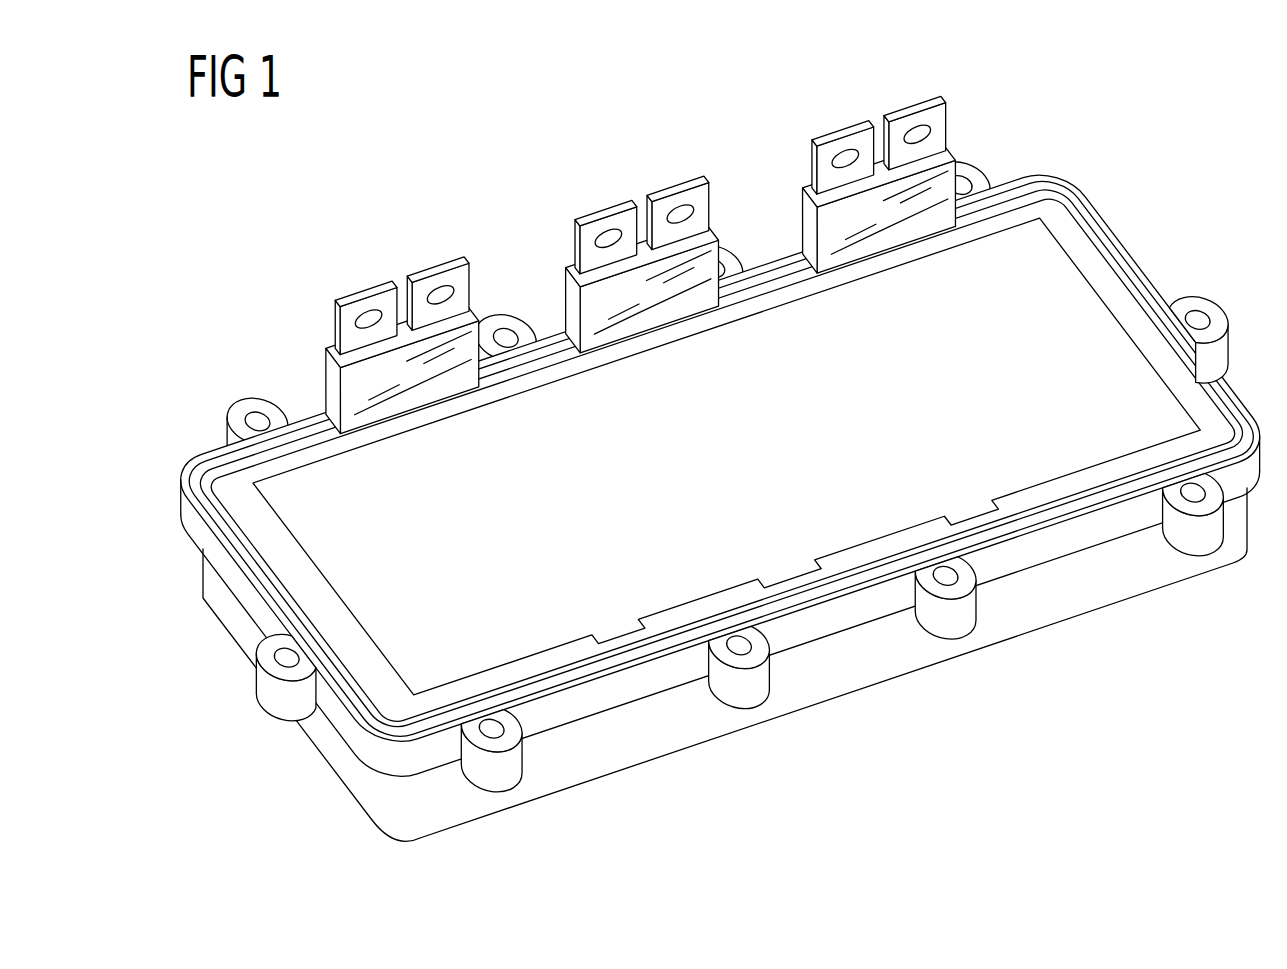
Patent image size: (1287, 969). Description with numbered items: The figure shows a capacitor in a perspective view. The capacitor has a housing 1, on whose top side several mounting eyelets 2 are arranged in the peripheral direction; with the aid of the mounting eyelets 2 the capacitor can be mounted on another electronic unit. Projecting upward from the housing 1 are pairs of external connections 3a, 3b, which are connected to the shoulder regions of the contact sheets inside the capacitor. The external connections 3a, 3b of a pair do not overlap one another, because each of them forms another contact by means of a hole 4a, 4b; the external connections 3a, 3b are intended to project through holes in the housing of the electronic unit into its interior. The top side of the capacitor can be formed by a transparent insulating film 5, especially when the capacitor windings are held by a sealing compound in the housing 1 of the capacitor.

The housing 1 is at (1160, 572).
The mounting eyelets 2 is at (960, 612).
The external connection 3a is at (934, 120).
The external connection 3b is at (826, 158).
The hole 4a is at (917, 130).
The hole 4b is at (843, 152).
The transparent insulating film 5 is at (1110, 312).